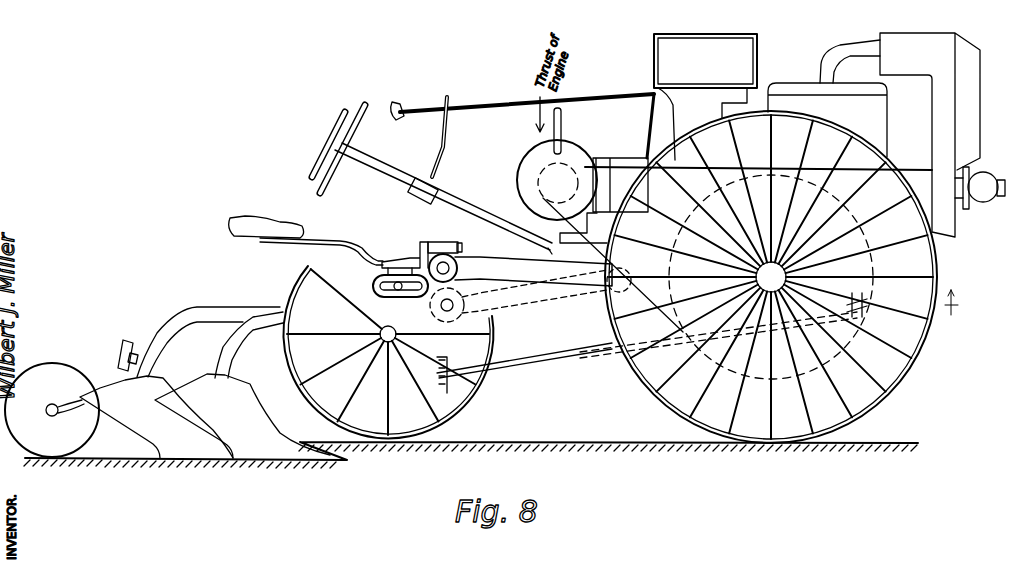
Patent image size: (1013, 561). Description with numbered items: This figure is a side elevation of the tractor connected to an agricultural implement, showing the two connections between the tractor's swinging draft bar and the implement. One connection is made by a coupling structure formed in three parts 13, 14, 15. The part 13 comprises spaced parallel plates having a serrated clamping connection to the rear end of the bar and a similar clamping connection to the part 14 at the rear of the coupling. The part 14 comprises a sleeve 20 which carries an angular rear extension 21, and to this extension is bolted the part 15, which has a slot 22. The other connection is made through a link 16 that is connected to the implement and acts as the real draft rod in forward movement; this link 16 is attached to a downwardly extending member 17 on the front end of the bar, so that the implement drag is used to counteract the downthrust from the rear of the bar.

The coupling part 13 is at (520, 273).
The coupling part 14 is at (413, 253).
The coupling part 15 is at (373, 277).
The link 16 is at (508, 360).
The downwardly extending member 17 is at (868, 297).
The sleeve 20 is at (437, 248).
The angular rear extension 21 is at (386, 258).
The slot 22 is at (396, 284).